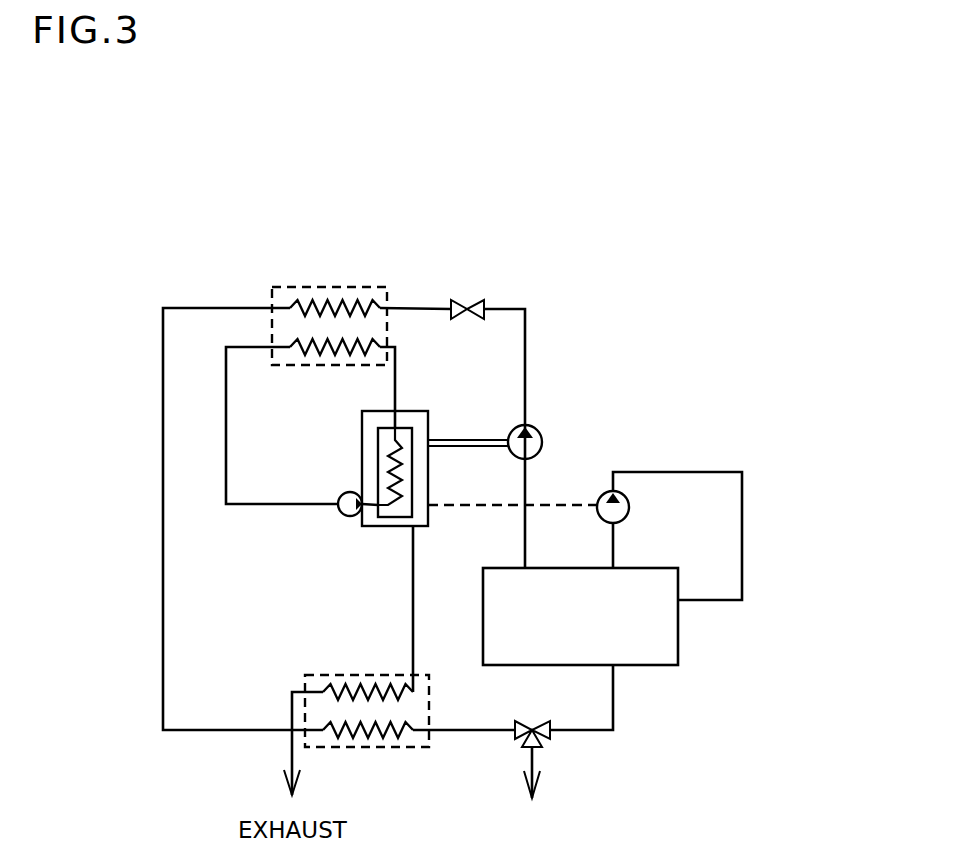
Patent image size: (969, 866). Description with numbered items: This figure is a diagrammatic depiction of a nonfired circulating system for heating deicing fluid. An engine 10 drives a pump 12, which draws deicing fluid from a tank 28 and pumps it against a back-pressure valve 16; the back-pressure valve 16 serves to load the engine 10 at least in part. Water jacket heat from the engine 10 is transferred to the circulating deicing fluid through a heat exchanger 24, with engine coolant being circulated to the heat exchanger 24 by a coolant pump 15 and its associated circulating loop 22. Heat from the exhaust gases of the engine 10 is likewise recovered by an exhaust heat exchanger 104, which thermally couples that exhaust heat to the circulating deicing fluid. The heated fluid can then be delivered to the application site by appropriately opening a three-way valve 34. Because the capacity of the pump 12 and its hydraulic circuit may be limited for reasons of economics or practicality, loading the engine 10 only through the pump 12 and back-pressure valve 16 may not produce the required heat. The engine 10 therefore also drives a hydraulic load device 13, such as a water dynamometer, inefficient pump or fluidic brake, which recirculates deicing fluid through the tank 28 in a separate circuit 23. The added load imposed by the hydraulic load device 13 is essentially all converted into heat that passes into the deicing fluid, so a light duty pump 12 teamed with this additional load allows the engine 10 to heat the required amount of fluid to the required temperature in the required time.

The engine 10 is at (408, 413).
The pump 12 is at (540, 432).
The hydraulic load device 13 is at (630, 498).
The coolant pump 15 is at (347, 513).
The back-pressure valve 16 is at (488, 292).
The circulating loop 22 is at (227, 433).
The separate circuit 23 is at (740, 558).
The heat exchanger 24 is at (325, 288).
The tank 28 is at (678, 665).
The three-way valve 34 is at (553, 742).
The exhaust heat exchanger 104 is at (360, 748).